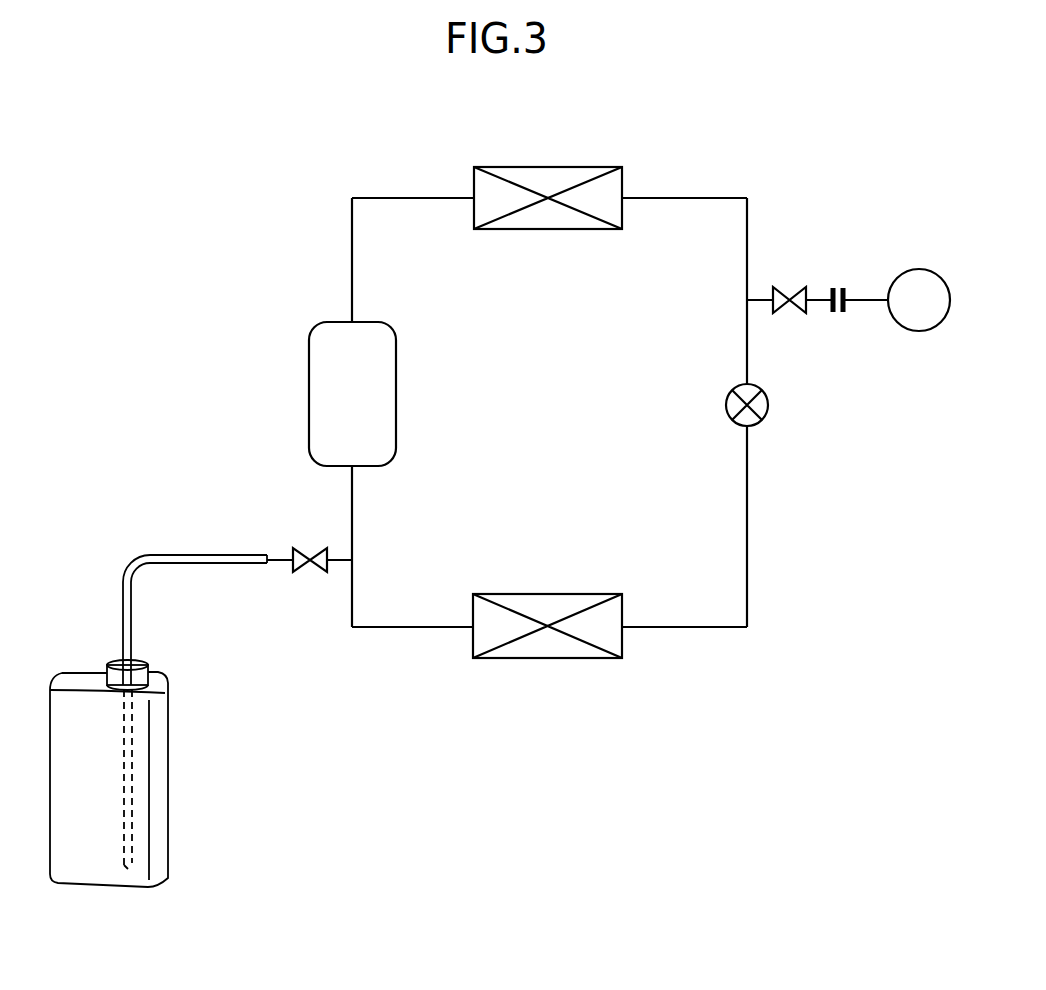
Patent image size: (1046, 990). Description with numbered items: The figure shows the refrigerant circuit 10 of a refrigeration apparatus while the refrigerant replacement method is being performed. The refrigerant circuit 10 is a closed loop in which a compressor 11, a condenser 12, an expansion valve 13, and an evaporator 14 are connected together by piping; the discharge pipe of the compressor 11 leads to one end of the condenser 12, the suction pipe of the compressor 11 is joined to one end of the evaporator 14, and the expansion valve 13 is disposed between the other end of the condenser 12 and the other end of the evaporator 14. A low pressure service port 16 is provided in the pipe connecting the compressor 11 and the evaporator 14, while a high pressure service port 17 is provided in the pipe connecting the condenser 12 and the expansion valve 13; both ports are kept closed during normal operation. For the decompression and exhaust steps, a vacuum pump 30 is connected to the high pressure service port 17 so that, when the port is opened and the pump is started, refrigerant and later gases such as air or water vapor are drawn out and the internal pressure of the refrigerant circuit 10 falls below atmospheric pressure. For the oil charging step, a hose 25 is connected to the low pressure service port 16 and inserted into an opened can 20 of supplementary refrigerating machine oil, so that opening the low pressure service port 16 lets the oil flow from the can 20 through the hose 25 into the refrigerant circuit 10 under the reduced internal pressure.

The refrigerant circuit 10 is at (719, 195).
The compressor 11 is at (309, 390).
The condenser 12 is at (547, 232).
The expansion valve 13 is at (768, 405).
The evaporator 14 is at (547, 592).
The low pressure service port 16 is at (280, 565).
The high pressure service port 17 is at (818, 293).
The can 20 is at (172, 773).
The hose 25 is at (187, 550).
The vacuum pump 30 is at (917, 268).